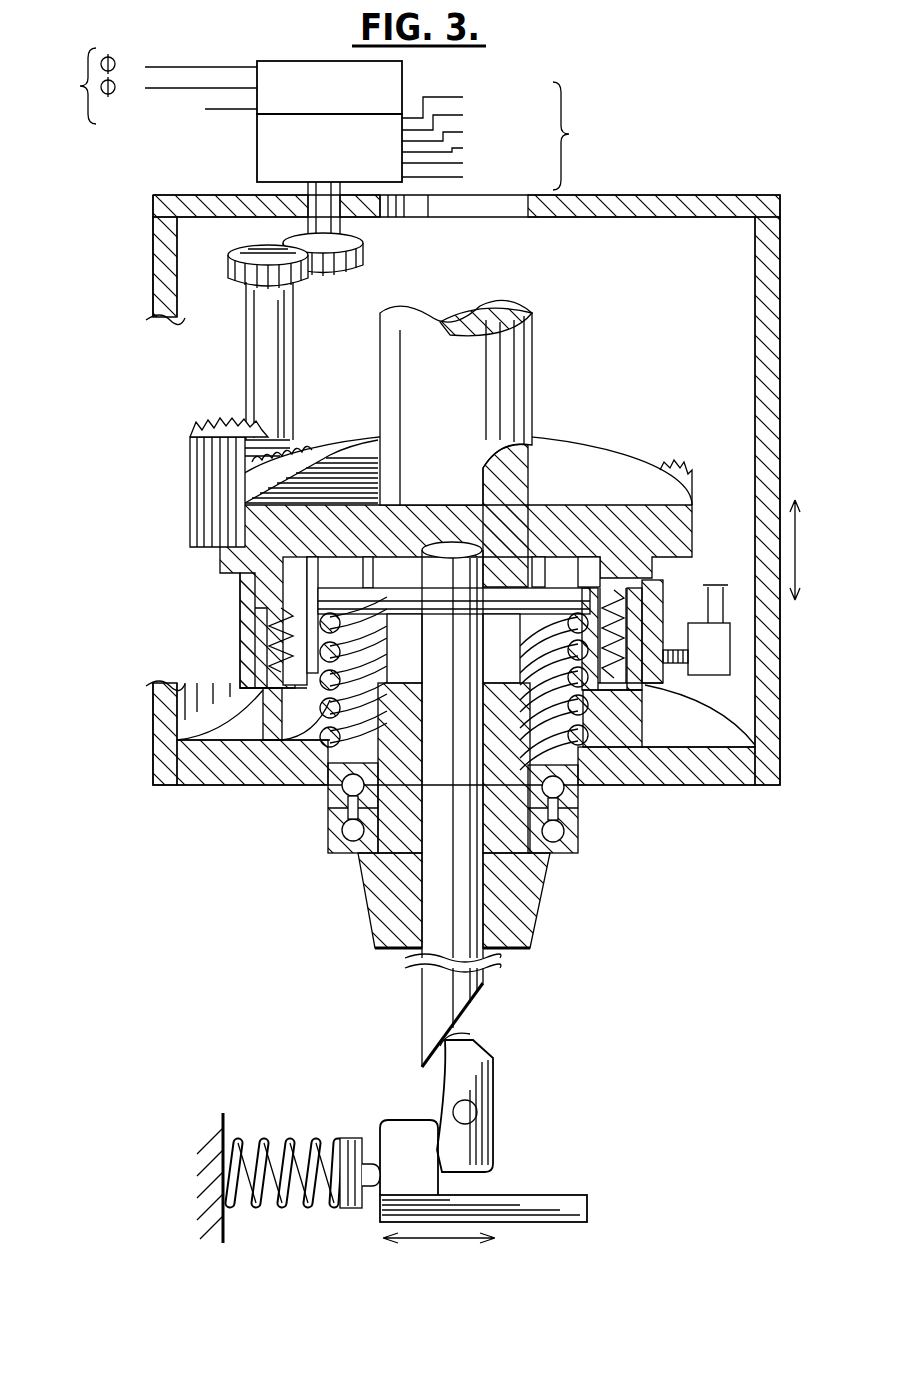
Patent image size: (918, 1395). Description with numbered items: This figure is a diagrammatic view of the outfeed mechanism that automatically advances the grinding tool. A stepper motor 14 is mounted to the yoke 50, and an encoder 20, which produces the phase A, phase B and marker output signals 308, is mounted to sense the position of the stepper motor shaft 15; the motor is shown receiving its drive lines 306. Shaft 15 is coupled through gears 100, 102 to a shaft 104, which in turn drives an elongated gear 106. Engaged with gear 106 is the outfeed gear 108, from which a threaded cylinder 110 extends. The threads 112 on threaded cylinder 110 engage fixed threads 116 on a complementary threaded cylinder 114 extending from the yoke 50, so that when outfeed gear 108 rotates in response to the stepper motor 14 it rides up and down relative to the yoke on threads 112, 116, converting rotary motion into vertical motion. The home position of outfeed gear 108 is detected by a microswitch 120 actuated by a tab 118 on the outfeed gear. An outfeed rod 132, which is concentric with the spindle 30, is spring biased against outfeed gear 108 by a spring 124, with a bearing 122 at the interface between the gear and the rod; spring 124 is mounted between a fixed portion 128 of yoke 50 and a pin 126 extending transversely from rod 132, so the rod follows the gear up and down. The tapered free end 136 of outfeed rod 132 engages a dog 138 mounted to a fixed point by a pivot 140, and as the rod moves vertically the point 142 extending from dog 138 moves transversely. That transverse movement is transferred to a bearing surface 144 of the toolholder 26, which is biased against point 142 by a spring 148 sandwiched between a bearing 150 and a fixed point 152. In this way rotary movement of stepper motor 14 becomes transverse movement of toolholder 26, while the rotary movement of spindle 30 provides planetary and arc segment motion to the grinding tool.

The stepper motor 14 is at (257, 146).
The stepper motor shaft 15 is at (345, 226).
The encoder 20 is at (402, 73).
The toolholder 26 is at (587, 1206).
The spindle 30 is at (521, 357).
The yoke 50 is at (718, 197).
The gear 100 is at (360, 257).
The gear 102 is at (292, 285).
The shaft 104 is at (292, 346).
The elongated gear 106 is at (195, 436).
The outfeed gear 108 is at (578, 456).
The threaded cylinder 110 is at (620, 698).
The threads 112 is at (280, 651).
The complementary threaded cylinder 114 is at (648, 733).
The fixed threads 116 is at (640, 633).
The tab 118 is at (686, 665).
The microswitch 120 is at (733, 632).
The bearing 122 is at (553, 545).
The spring 124 is at (590, 777).
The pin 126 is at (330, 598).
The fixed portion 128 is at (330, 790).
The outfeed rod 132 is at (432, 905).
The free end 136 is at (479, 1001).
The dog 138 is at (471, 1035).
The pivot 140 is at (474, 1110).
The point 142 is at (446, 1149).
The bearing surface 144 is at (440, 1151).
The spring 148 is at (258, 1140).
The bearing 150 is at (366, 1162).
The fixed point 152 is at (222, 1125).
The drive signals 306 is at (511, 138).
The output signals 308 is at (146, 86).